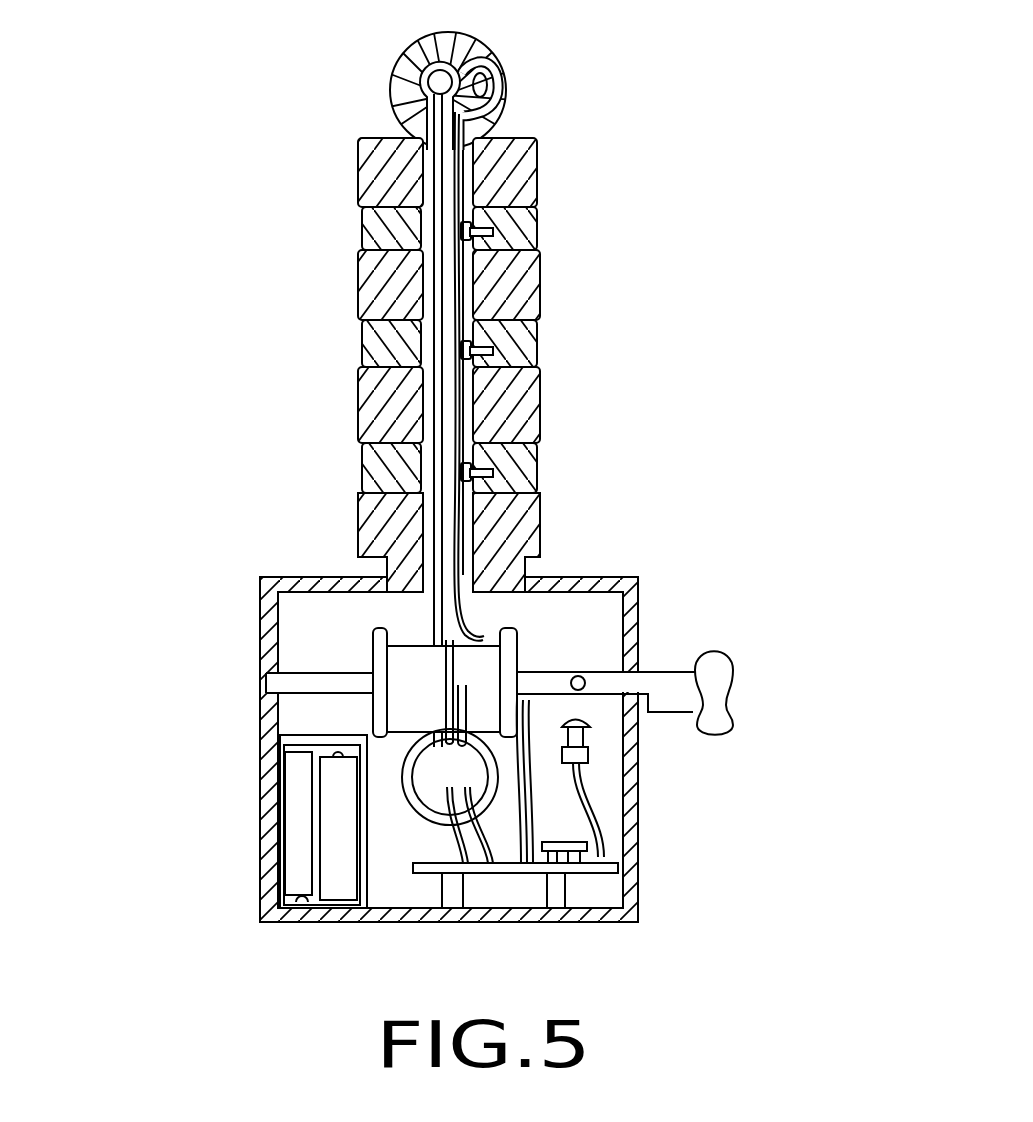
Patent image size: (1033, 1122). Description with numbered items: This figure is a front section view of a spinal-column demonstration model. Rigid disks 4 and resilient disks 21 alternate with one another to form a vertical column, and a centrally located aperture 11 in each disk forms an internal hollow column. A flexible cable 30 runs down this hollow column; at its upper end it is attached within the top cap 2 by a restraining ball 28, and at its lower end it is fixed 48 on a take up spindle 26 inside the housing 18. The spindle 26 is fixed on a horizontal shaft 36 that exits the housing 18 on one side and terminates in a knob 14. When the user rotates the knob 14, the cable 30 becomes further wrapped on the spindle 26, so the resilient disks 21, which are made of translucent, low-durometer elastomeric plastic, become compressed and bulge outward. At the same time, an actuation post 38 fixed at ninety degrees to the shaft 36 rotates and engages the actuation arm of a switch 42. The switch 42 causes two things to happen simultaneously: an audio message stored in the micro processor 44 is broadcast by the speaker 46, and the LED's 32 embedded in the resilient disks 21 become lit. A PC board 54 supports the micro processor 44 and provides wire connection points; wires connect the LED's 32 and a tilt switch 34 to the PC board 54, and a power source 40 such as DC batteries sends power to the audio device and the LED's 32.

The top cap 2 is at (473, 42).
The rigid disks 4 is at (576, 355).
The aperture 11 is at (423, 230).
The knob 14 is at (718, 687).
The housing 18 is at (260, 800).
The resilient disks 21 is at (538, 237).
The take up spindle 26 is at (407, 660).
The restraining ball 28 is at (407, 62).
The flexible cable 30 is at (440, 410).
The LED's 32 is at (490, 232).
The tilt switch 34 is at (484, 82).
The horizontal shaft 36 is at (535, 675).
The actuation post 38 is at (597, 672).
The power source 40 is at (297, 840).
The switch 42 is at (590, 753).
The micro processor 44 is at (570, 838).
The speaker 46 is at (427, 773).
The cable fixing point 48 is at (460, 687).
The PC board 54 is at (432, 870).